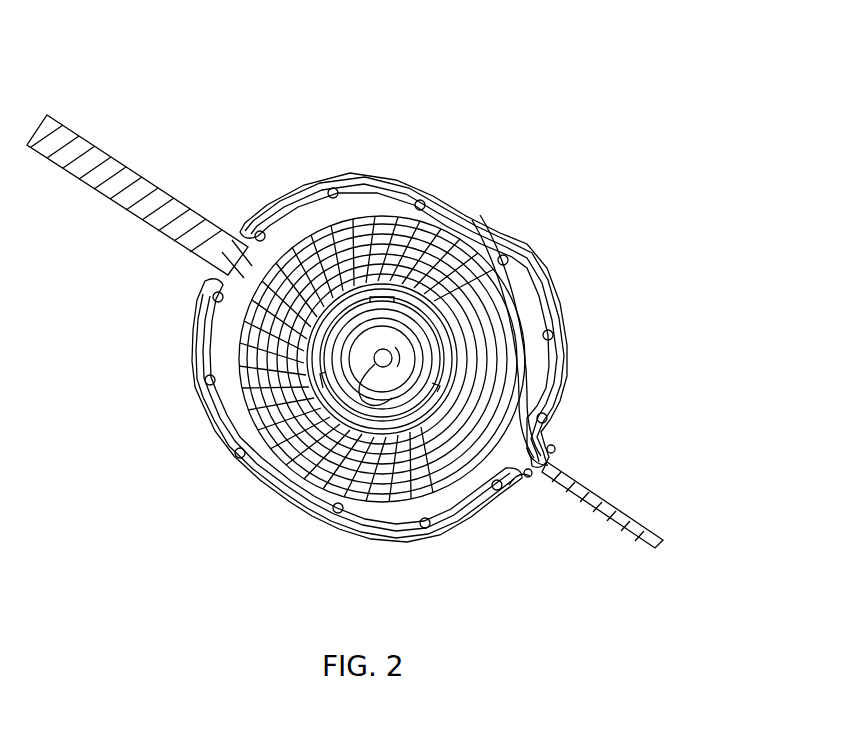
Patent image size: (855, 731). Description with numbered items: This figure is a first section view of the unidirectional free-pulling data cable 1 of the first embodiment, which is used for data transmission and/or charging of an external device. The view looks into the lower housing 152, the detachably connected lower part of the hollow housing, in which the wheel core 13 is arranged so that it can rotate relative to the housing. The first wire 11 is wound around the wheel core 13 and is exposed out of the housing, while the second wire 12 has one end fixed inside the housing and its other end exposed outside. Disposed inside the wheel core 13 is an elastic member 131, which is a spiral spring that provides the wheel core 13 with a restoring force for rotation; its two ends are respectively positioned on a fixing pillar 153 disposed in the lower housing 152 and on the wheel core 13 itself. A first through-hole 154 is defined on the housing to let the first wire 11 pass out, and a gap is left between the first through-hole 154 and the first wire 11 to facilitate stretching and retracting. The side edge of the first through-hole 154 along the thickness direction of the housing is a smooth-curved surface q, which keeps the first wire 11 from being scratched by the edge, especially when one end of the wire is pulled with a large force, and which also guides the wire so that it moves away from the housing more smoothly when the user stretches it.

The unidirectional free-pulling data cable 1 is at (392, 34).
The first wire 11 is at (663, 540).
The second wire 12 is at (92, 145).
The wheel core 13 is at (352, 372).
The elastic member 131 is at (416, 362).
The lower housing 152 is at (297, 505).
The fixing pillar 153 is at (386, 353).
The first through-hole 154 is at (552, 457).
The smooth-curved surface q is at (553, 448).